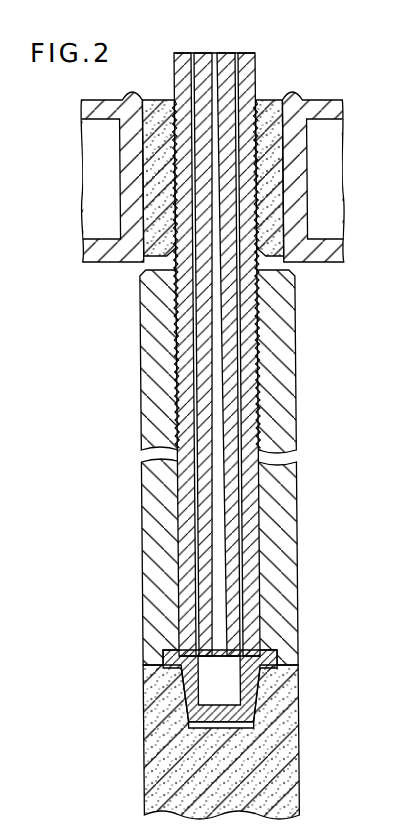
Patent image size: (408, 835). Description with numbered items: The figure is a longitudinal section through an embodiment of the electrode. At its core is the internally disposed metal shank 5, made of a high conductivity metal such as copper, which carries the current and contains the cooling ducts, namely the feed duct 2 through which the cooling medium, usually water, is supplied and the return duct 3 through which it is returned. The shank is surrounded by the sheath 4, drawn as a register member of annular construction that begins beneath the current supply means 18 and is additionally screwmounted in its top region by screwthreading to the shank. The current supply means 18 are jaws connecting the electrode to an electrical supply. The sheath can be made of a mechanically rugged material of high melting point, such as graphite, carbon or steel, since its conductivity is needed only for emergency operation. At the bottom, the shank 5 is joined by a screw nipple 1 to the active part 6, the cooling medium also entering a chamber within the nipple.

The screw nipple 1 is at (179, 691).
The feed duct 2 is at (172, 391).
The return duct 3 is at (214, 319).
The sheath 4 is at (287, 541).
The metal shank 5 is at (249, 53).
The active part 6 is at (282, 764).
The current supply means 18 is at (160, 100).